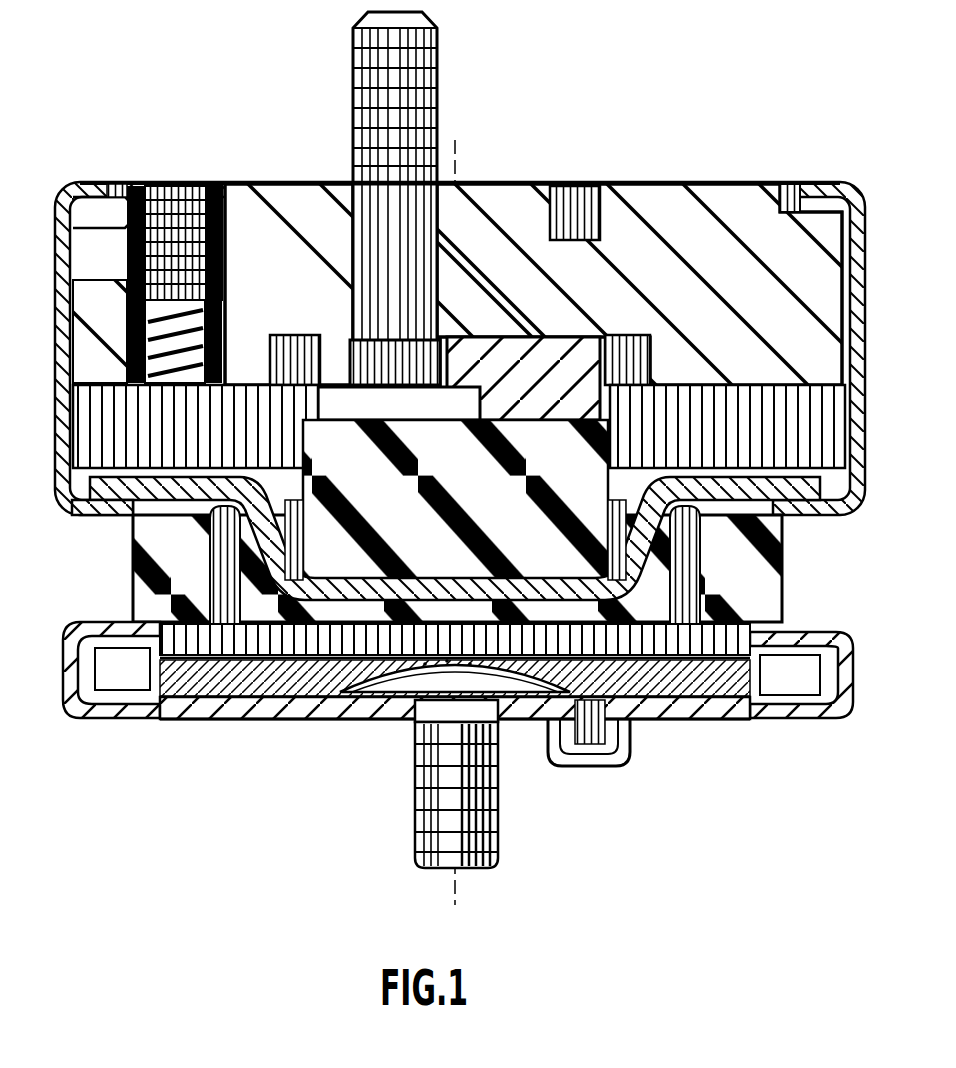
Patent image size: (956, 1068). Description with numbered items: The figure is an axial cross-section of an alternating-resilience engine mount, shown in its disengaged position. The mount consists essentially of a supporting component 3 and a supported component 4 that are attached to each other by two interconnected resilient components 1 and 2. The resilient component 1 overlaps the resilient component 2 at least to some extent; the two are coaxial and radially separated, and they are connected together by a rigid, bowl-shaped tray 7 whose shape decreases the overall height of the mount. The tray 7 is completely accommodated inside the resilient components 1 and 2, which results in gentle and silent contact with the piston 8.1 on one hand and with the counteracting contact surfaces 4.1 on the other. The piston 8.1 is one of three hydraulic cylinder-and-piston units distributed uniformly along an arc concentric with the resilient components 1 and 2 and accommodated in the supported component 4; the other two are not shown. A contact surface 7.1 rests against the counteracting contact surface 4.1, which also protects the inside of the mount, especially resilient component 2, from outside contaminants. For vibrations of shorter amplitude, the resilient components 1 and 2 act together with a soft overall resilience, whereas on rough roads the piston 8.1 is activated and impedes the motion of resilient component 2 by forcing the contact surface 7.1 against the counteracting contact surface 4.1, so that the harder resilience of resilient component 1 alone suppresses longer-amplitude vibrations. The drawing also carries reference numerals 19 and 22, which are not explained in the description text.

The resilient component 1 is at (766, 592).
The resilient component 2 is at (501, 503).
The supporting component 3 is at (725, 718).
The supported component 4 is at (672, 196).
The counteracting contact surface 4.1 is at (874, 218).
The tray 7 is at (388, 590).
The contact surface 7.1 is at (796, 492).
The piston 8.1 is at (215, 302).
The housing flange 19 is at (100, 522).
The axis 22 is at (460, 172).